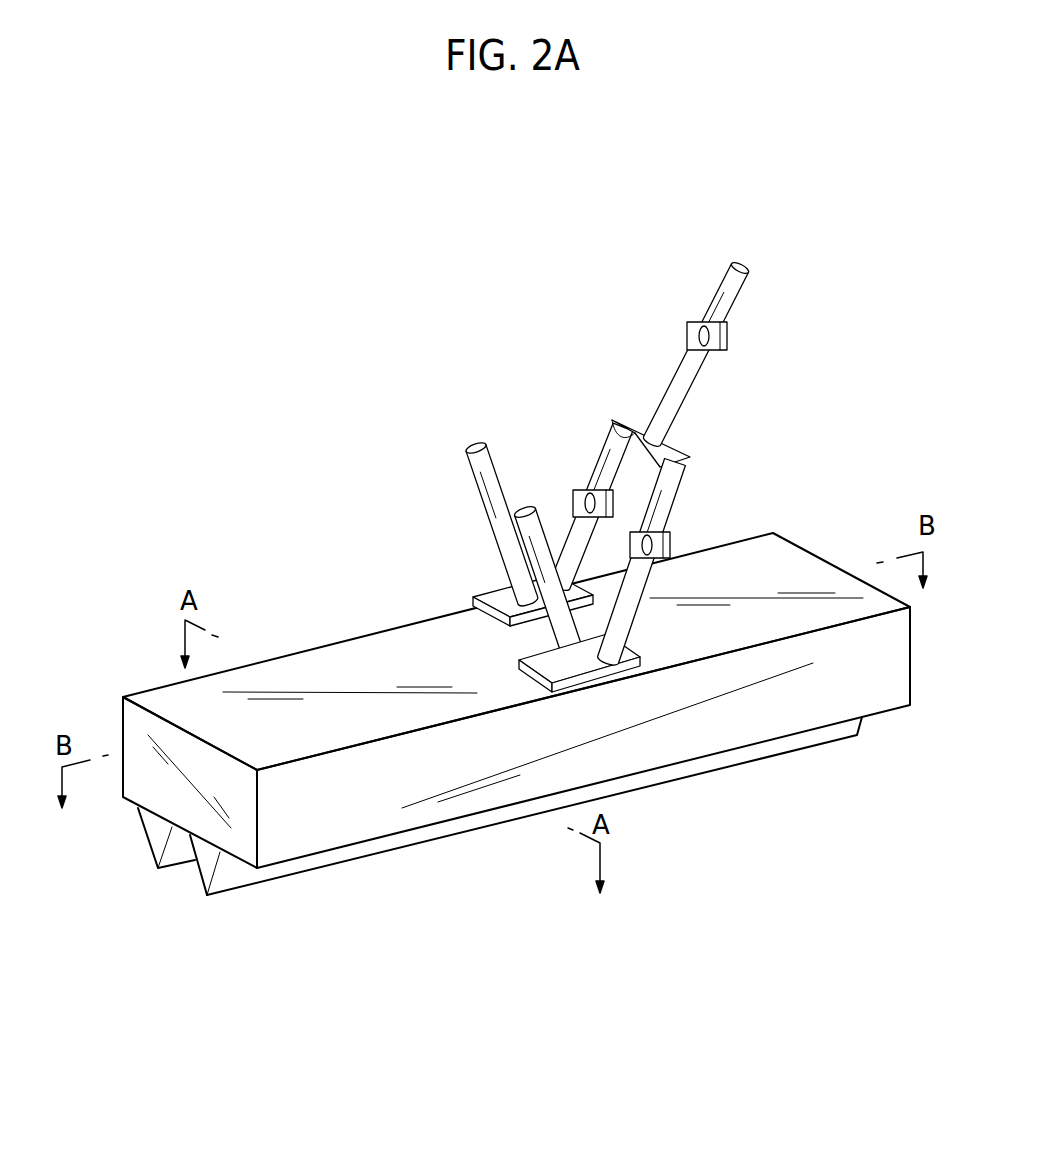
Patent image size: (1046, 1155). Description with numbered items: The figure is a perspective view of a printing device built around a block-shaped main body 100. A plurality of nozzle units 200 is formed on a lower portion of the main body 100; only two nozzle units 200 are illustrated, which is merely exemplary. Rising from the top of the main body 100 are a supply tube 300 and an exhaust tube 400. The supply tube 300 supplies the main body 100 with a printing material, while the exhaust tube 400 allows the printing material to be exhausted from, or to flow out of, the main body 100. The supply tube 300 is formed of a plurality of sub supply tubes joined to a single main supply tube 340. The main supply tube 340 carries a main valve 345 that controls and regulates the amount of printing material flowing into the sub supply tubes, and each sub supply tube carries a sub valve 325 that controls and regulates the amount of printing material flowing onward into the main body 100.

The main body 100 is at (295, 837).
The nozzle units 200 is at (238, 876).
The supply tube 300 is at (624, 476).
The sub valve 325 is at (573, 497).
The main supply tube 340 is at (737, 293).
The main valve 345 is at (728, 338).
The exhaust tube 400 is at (497, 530).